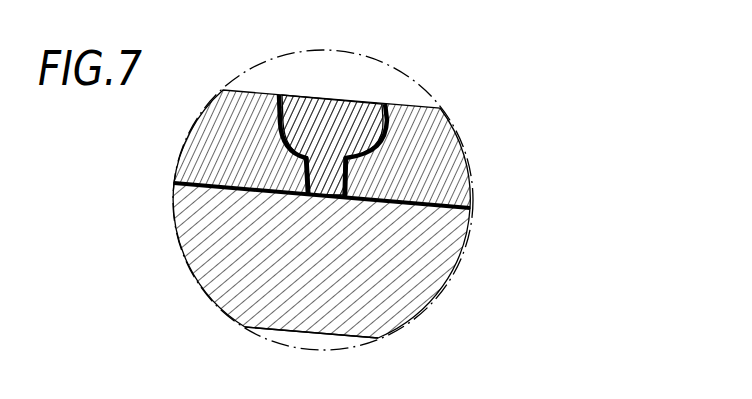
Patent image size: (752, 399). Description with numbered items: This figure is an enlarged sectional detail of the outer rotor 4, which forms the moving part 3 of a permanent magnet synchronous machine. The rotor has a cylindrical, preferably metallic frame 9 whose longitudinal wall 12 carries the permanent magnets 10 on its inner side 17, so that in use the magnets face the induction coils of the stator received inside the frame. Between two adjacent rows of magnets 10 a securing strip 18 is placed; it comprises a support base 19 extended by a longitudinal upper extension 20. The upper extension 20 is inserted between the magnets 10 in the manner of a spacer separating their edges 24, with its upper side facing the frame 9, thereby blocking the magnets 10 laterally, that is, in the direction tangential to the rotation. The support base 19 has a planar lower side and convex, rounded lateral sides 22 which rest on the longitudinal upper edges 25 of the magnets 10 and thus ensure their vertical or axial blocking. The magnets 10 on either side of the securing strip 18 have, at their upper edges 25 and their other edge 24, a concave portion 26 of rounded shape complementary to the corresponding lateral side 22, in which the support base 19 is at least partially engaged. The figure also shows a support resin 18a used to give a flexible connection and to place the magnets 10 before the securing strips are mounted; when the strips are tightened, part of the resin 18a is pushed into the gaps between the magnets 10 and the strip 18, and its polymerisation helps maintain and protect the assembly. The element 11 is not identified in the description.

The moving part 3 is at (278, 200).
The outer rotor 4 is at (149, 265).
The frame 9 is at (188, 312).
The permanent magnets 10 is at (230, 120).
The underside 11 is at (290, 332).
The longitudinal wall 12 is at (434, 257).
The inner side 17 is at (240, 182).
The securing strip 18 is at (314, 120).
The support resin 18a is at (385, 140).
The support base 19 is at (307, 96).
The longitudinal upper extension 20 is at (318, 181).
The lateral sides 22 is at (293, 98).
The edges 24 is at (508, 208).
The longitudinal upper edges 25 is at (384, 102).
The concave portion 26 is at (394, 125).